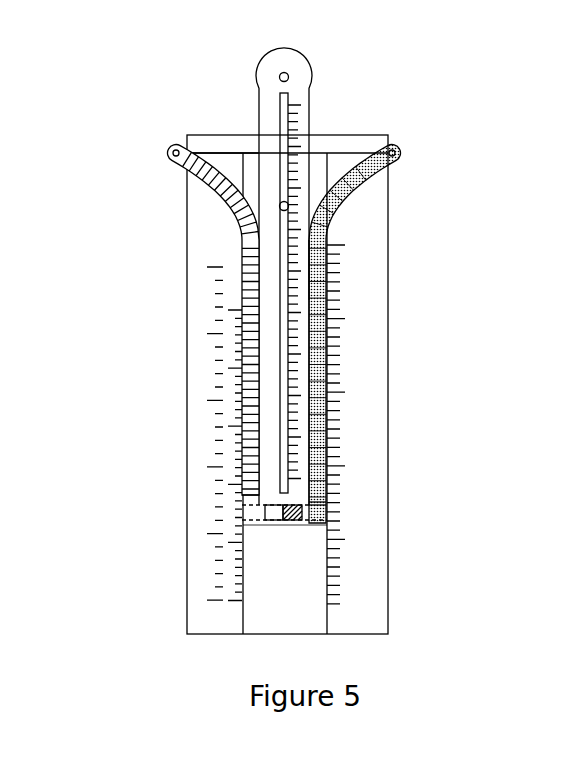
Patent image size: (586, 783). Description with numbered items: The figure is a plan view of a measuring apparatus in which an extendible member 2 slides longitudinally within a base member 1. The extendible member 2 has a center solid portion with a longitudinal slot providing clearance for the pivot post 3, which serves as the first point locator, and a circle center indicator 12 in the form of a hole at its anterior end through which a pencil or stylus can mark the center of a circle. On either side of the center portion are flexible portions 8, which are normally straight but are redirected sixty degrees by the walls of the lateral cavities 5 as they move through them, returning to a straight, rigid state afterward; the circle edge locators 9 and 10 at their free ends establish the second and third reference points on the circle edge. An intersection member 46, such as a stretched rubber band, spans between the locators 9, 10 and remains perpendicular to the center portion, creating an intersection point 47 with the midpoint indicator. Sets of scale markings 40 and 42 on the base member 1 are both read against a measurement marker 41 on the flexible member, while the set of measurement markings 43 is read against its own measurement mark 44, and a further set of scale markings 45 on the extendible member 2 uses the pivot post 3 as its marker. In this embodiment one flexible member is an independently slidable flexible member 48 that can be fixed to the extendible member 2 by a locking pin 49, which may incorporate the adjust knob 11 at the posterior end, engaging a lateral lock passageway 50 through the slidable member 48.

The base member 1 is at (390, 382).
The extendible member 2 is at (303, 421).
The pivot post 3 is at (292, 210).
The lateral cavities 5 is at (284, 332).
The flexible portions 8 is at (241, 215).
The circle edge locator 9 is at (397, 155).
The circle edge locator 10 is at (170, 155).
The adjust knob 11 is at (296, 523).
The circle center indicator 12 is at (291, 77).
The set of scale markings 40 is at (235, 455).
The measurement marker 41 is at (243, 497).
The set of scale markings 42 is at (205, 399).
The set of measurement markings 43 is at (320, 499).
The measurement mark 44 is at (306, 268).
The set of scale markings 45 is at (346, 322).
The intersection member 46 is at (243, 152).
The intersection point 47 is at (290, 150).
The slidable flexible member 48 is at (336, 197).
The locking pin 49 is at (274, 523).
The lock passageway 50 is at (322, 521).